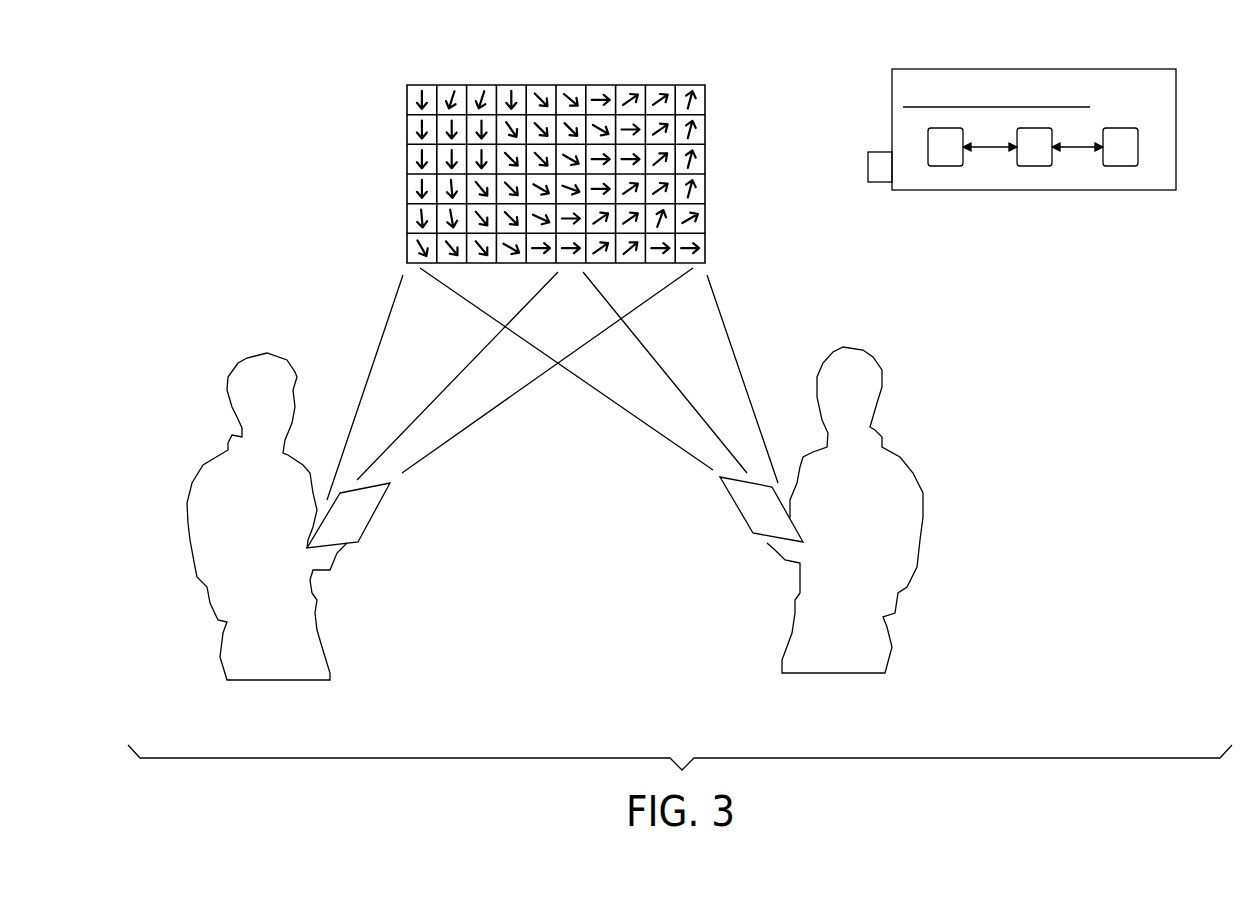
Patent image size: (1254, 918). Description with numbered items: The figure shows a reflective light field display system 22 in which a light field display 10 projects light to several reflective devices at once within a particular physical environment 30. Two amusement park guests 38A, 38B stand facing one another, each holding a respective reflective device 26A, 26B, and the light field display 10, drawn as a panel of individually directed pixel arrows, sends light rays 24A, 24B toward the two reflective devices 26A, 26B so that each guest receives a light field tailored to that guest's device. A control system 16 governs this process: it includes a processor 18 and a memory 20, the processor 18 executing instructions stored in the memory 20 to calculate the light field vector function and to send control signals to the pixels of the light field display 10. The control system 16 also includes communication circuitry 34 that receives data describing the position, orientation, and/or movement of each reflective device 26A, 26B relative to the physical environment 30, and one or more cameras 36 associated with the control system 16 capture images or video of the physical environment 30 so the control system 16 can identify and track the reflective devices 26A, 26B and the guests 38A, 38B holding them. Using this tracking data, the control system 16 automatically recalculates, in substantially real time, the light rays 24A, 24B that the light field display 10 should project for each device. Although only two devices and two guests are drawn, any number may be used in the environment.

The light field display 10 is at (407, 132).
The reflective light field display system 22 is at (265, 168).
The control system 16 is at (1056, 154).
The memory 20 is at (945, 166).
The processor 18 is at (1035, 166).
The communication circuitry 34 is at (1120, 166).
The cameras 36 is at (868, 182).
The light rays 24A is at (385, 303).
The light rays 24B is at (725, 303).
The physical environment 30 is at (568, 446).
The amusement park guest 38A is at (212, 435).
The amusement park guest 38B is at (910, 435).
The reflective device 26A is at (350, 514).
The reflective device 26B is at (755, 509).